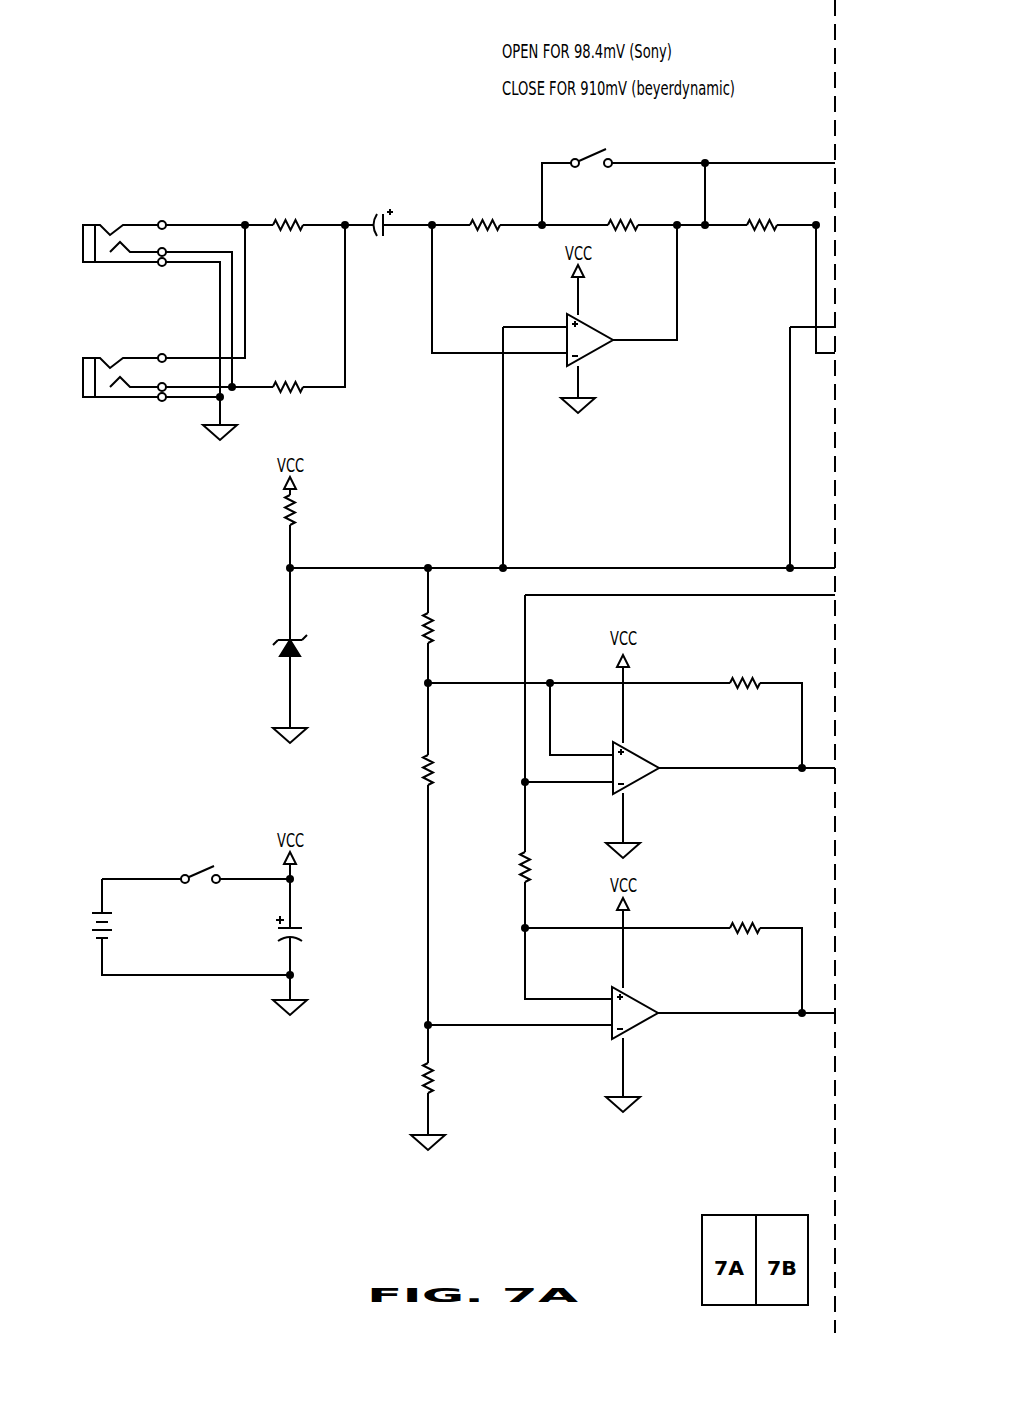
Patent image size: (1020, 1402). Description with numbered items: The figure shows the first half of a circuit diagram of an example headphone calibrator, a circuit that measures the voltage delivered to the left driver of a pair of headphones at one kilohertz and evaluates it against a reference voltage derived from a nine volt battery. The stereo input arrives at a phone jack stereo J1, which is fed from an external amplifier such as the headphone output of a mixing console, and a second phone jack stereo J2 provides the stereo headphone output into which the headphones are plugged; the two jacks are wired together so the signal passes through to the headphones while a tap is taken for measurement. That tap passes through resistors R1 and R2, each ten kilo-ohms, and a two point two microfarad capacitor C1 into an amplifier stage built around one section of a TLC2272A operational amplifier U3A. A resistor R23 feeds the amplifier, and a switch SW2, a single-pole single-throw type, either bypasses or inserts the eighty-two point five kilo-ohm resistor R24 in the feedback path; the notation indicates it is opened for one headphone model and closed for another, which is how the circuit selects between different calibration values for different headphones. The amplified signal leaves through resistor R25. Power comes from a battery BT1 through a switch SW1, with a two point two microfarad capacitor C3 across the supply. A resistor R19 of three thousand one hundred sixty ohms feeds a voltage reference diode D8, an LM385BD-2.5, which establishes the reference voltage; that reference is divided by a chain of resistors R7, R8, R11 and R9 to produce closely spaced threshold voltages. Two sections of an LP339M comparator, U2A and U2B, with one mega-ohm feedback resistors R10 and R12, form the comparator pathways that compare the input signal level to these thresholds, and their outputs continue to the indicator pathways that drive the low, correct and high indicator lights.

The phone jack stereo J1 is at (135, 257).
The phone jack stereo J2 is at (135, 391).
The resistor R1 is at (288, 231).
The resistor R2 is at (288, 392).
The capacitor C1 is at (387, 228).
The resistor R23 is at (485, 231).
The switch SW2 is at (601, 158).
The resistor R24 is at (624, 231).
The resistor R25 is at (761, 231).
The operational amplifier U3A is at (623, 340).
The resistor R19 is at (317, 511).
The voltage reference diode D8 is at (340, 654).
The resistor R7 is at (451, 624).
The resistor R8 is at (447, 774).
The resistor R11 is at (550, 868).
The resistor R9 is at (451, 1081).
The resistor R10 is at (742, 688).
The comparator U2A is at (658, 770).
The resistor R12 is at (742, 933).
The comparator U2B is at (658, 1015).
The switch SW1 is at (214, 876).
The battery BT1 is at (137, 926).
The capacitor C3 is at (310, 933).